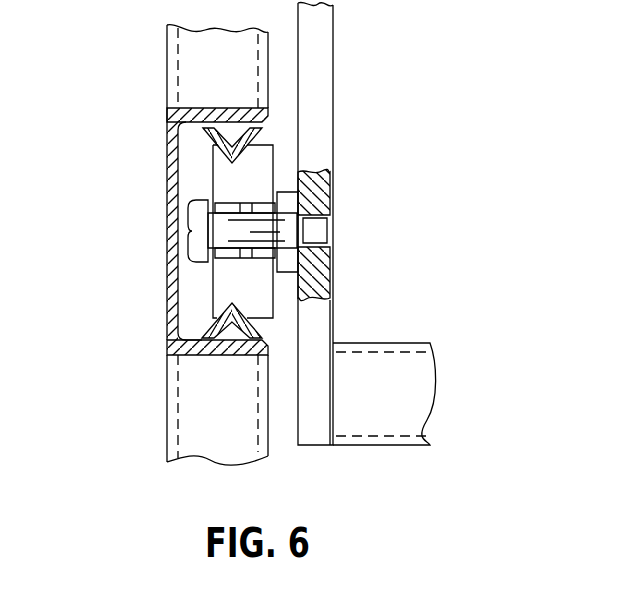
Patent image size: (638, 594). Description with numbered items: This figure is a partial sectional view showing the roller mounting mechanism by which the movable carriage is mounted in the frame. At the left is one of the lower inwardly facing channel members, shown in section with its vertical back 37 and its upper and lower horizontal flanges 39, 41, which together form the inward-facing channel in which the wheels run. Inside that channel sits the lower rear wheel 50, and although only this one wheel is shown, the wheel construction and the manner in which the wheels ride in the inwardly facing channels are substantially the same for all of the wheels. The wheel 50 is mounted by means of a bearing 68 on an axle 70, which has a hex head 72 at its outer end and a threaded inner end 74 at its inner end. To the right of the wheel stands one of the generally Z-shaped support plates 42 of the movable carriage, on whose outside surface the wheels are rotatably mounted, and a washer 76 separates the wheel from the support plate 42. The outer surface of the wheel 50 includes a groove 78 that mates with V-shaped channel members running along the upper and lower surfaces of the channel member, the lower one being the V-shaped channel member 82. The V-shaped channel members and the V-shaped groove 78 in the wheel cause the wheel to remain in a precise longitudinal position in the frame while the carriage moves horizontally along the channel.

The vertical back 37 is at (168, 300).
The upper horizontal flange 39 is at (227, 110).
The lower horizontal flange 41 is at (238, 348).
The support plate 42 is at (323, 32).
The lower rear wheel 50 is at (220, 178).
The bearing 68 is at (242, 203).
The axle 70 is at (220, 238).
The hex head 72 is at (195, 232).
The threaded inner end 74 is at (317, 233).
The washer 76 is at (292, 263).
The groove 78 is at (245, 150).
The V-shaped channel member 82 is at (208, 330).